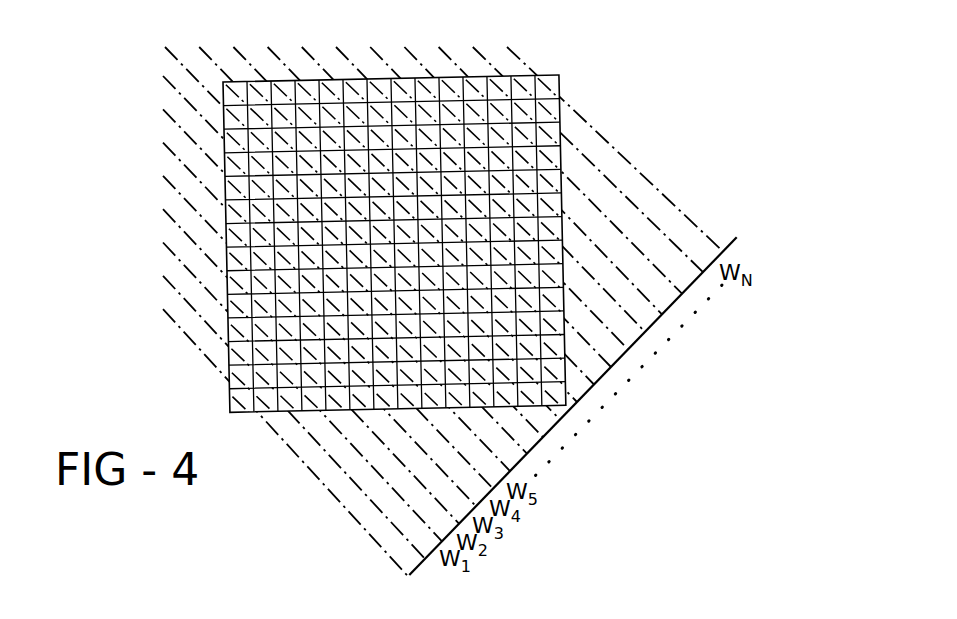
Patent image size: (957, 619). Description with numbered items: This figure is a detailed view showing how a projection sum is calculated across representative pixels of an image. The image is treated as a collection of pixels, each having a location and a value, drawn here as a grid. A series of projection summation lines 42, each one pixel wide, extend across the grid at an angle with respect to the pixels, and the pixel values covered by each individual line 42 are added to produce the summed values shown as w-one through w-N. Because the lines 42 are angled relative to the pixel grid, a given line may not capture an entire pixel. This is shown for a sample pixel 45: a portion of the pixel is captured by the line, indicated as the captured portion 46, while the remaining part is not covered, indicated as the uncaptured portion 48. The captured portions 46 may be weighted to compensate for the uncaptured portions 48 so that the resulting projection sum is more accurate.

The projection summation line 42 is at (667, 192).
The sample pixel 45 is at (547, 98).
The captured portion 46 is at (540, 75).
The uncaptured portion 48 is at (557, 76).